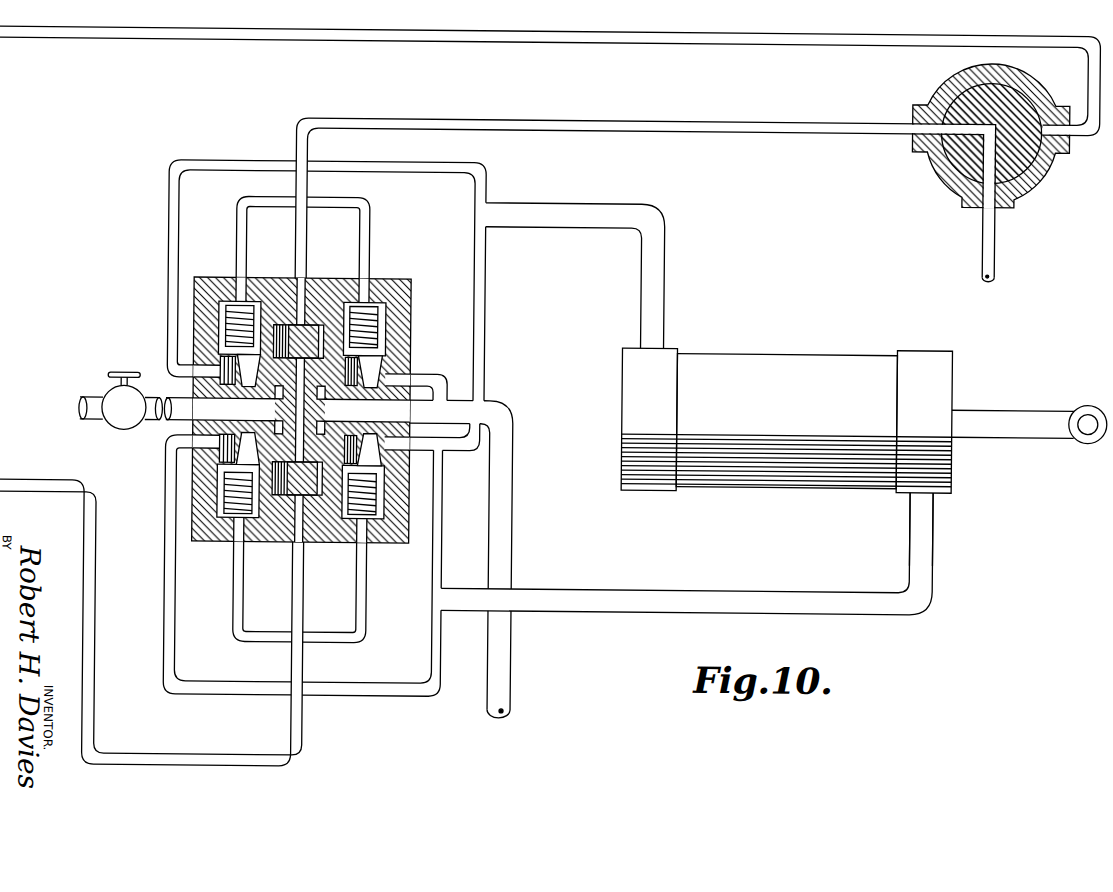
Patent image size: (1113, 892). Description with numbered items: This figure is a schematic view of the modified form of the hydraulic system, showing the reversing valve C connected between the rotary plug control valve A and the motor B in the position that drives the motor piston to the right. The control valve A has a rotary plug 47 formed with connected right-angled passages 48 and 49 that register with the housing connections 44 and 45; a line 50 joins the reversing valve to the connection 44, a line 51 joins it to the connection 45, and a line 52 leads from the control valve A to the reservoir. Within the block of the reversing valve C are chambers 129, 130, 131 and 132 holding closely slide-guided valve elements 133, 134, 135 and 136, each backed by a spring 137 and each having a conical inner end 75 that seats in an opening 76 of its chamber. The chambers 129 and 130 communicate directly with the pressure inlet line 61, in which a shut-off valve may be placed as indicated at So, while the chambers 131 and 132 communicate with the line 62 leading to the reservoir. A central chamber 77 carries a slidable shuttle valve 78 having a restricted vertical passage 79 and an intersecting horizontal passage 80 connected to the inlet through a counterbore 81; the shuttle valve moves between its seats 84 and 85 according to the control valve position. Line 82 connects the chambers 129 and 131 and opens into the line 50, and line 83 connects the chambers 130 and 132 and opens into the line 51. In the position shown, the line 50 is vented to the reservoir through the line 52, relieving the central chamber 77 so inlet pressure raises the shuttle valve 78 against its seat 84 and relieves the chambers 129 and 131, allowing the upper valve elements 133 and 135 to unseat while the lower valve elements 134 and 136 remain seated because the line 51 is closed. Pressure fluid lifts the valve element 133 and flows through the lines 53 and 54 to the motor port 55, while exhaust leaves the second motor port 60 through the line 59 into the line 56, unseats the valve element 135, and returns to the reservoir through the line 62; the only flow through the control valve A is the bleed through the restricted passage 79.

The control valve A is at (977, 134).
The motor B is at (864, 390).
The reversing valve C is at (296, 404).
The connection 44 is at (917, 104).
The connection 45 is at (1058, 145).
The rotary plug 47 is at (1015, 91).
The passage 48 is at (998, 153).
The passage 49 is at (938, 144).
The line 50 is at (552, 117).
The line 51 is at (708, 38).
The line 52 is at (980, 221).
The line 53 is at (219, 160).
The line 54 is at (553, 202).
The port 55 is at (667, 344).
The line 56 is at (436, 533).
The line 59 is at (664, 587).
The motor port 60 is at (936, 487).
The line 61 is at (97, 398).
The line 62 is at (505, 465).
The conical shaped inner end 75 is at (218, 366).
The opening 76 is at (193, 428).
The central chamber 77 is at (338, 300).
The shuttle valve 78 is at (318, 470).
The restricted vertical passage 79 is at (277, 300).
The horizontal passage 80 is at (250, 412).
The counterbore 81 is at (278, 410).
The line 82 is at (350, 202).
The line 83 is at (369, 613).
The seat 84 is at (310, 323).
The seat 85 is at (308, 525).
The chamber 129 is at (232, 300).
The chamber 130 is at (232, 520).
The chamber 131 is at (412, 295).
The chamber 132 is at (387, 545).
The valve element 133 is at (223, 318).
The valve element 134 is at (220, 483).
The valve element 135 is at (380, 337).
The valve element 136 is at (412, 473).
The spring 137 is at (243, 533).
The stop valve So is at (117, 429).